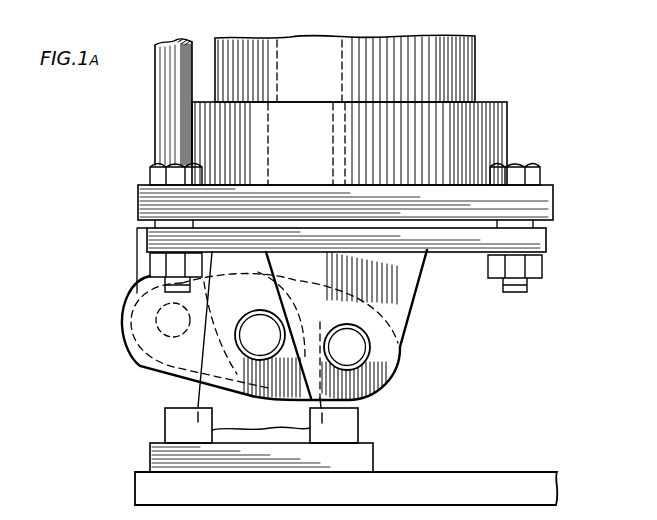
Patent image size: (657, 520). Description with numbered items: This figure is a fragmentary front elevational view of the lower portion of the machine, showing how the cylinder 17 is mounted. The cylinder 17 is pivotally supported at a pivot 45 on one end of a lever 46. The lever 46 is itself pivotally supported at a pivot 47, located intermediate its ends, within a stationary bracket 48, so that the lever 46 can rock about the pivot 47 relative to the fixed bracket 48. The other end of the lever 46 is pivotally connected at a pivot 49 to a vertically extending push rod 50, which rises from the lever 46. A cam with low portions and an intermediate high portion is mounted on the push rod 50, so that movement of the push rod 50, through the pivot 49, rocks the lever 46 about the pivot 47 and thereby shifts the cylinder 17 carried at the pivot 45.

The cylinder 17 is at (471, 49).
The push rod 50 is at (158, 114).
The lever 46 is at (160, 368).
The pivot connection 49 is at (157, 327).
The pivot support 47 is at (263, 347).
The pivot support 45 is at (352, 354).
The stationary bracket 48 is at (198, 402).